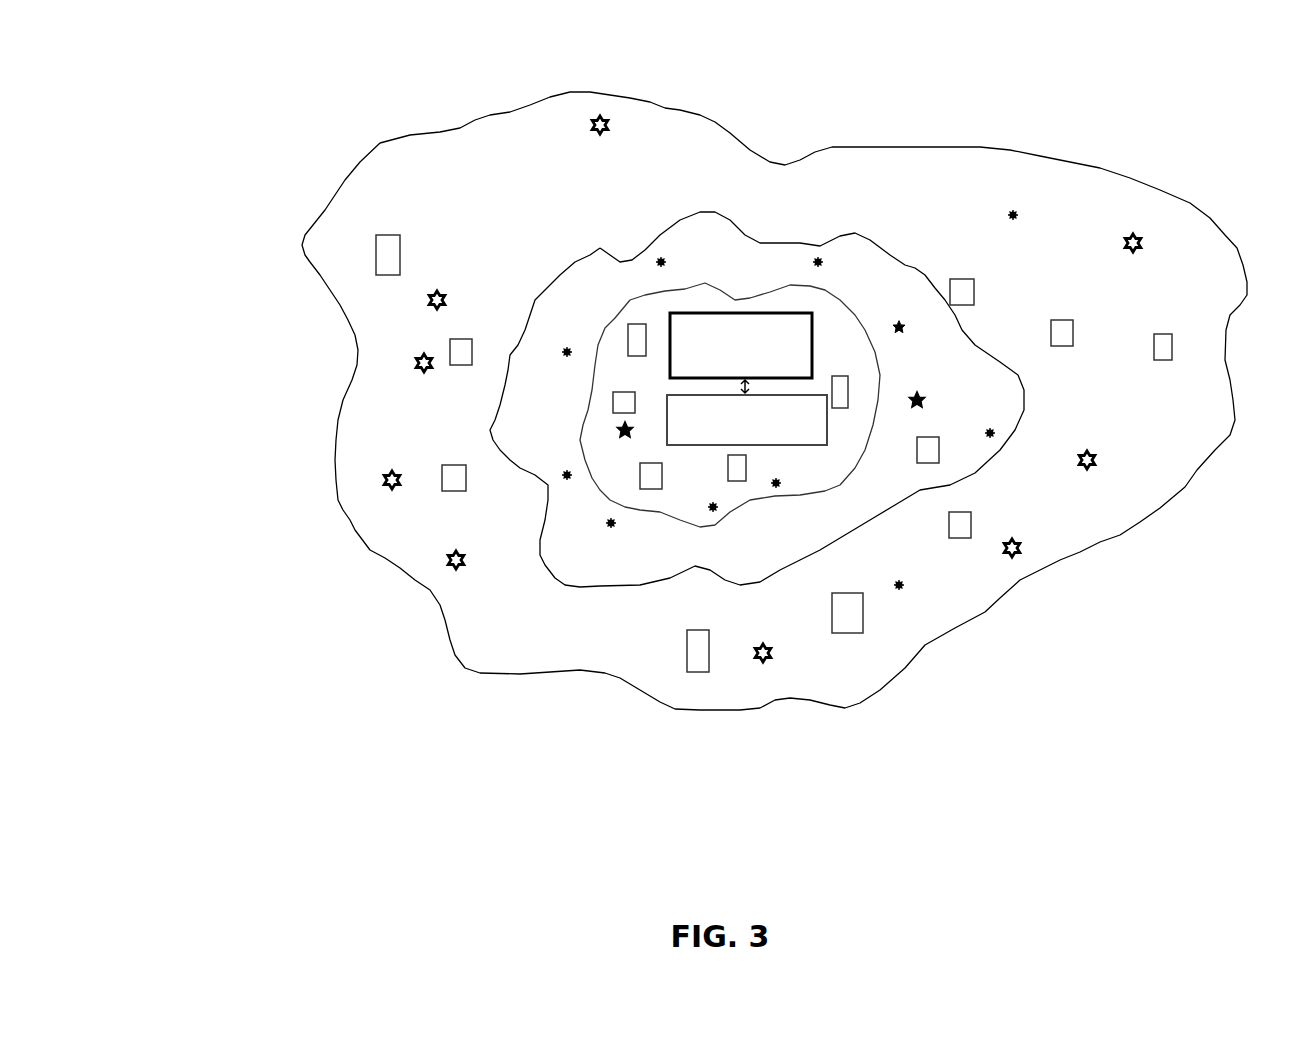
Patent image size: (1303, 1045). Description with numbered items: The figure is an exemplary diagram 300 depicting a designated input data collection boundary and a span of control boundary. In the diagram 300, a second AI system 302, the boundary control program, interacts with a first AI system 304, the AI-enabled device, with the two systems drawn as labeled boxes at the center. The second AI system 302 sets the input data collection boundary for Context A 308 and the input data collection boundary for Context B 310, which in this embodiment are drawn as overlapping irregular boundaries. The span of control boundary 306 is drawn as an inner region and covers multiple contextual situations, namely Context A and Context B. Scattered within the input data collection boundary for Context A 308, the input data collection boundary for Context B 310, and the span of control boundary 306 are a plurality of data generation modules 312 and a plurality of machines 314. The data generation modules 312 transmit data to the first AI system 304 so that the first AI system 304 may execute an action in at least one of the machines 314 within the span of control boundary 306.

The diagram 300 is at (178, 72).
The second AI system 302 is at (693, 447).
The first AI system 304 is at (736, 313).
The span of control boundary 306 is at (847, 473).
The input data collection boundary for Context A 308 is at (632, 257).
The input data collection boundary for Context B 310 is at (410, 137).
The data generation modules 312 is at (1133, 243).
The machines 314 is at (645, 480).